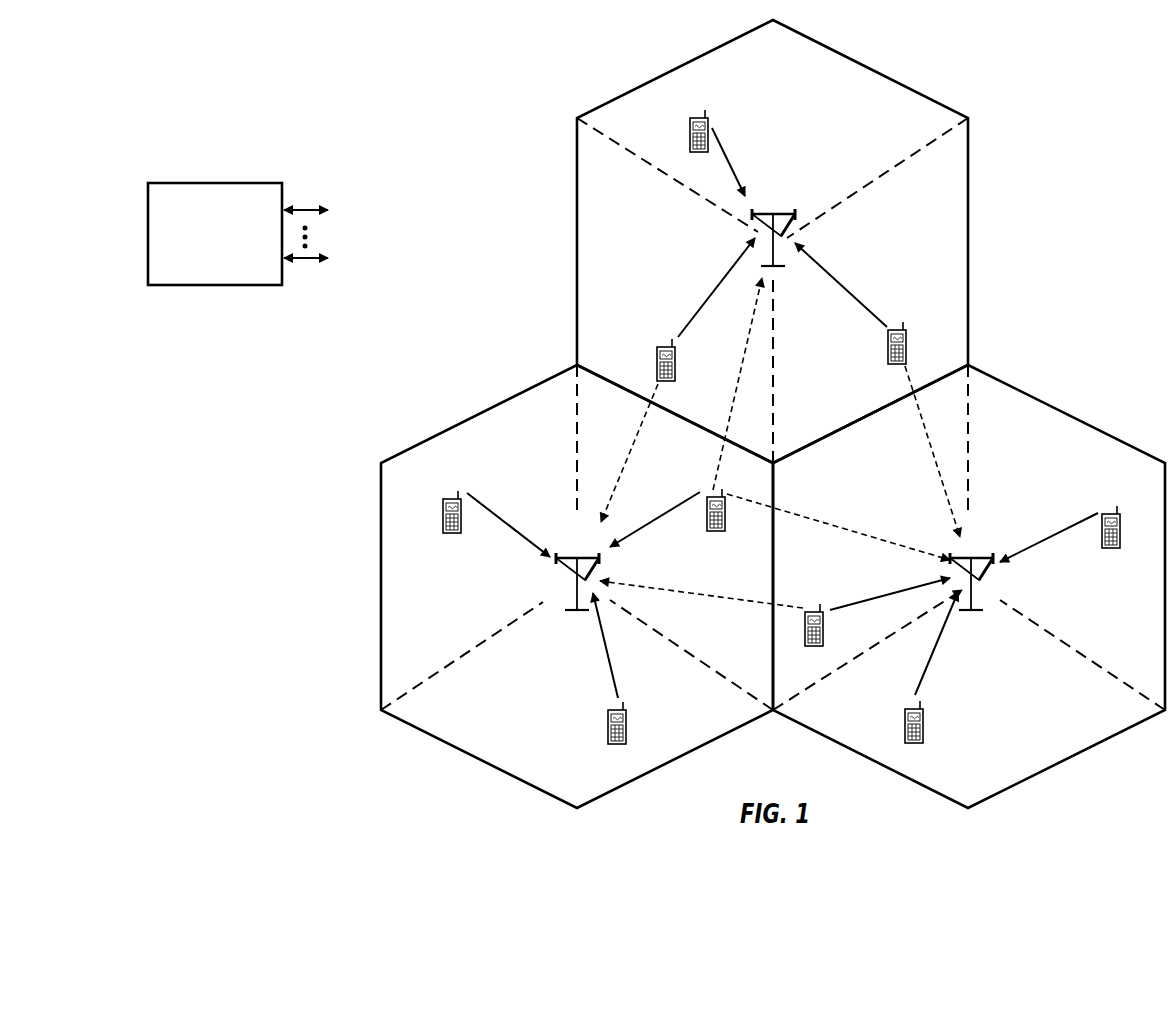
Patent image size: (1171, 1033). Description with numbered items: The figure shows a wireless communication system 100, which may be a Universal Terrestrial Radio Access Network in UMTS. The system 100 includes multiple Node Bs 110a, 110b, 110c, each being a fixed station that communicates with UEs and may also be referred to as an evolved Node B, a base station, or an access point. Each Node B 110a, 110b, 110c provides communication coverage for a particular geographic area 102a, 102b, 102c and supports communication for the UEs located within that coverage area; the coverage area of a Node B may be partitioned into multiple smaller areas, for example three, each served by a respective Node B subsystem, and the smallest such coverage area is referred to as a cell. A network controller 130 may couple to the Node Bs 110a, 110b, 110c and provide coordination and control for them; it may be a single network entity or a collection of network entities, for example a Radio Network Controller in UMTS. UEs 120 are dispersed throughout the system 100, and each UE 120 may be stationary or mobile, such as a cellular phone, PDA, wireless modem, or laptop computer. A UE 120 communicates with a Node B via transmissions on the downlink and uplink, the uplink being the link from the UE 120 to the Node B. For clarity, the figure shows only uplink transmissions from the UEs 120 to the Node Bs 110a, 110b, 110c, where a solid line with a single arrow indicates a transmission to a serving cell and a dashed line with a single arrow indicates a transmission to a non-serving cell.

The wireless communication system 100 is at (1111, 82).
The geographic area 102a is at (876, 69).
The geographic area 102b is at (477, 413).
The geographic area 102c is at (1075, 414).
The Node B 110a is at (772, 209).
The Node B 110b is at (574, 555).
The Node B 110c is at (979, 555).
The UE 120 is at (688, 124).
The network controller 130 is at (210, 183).